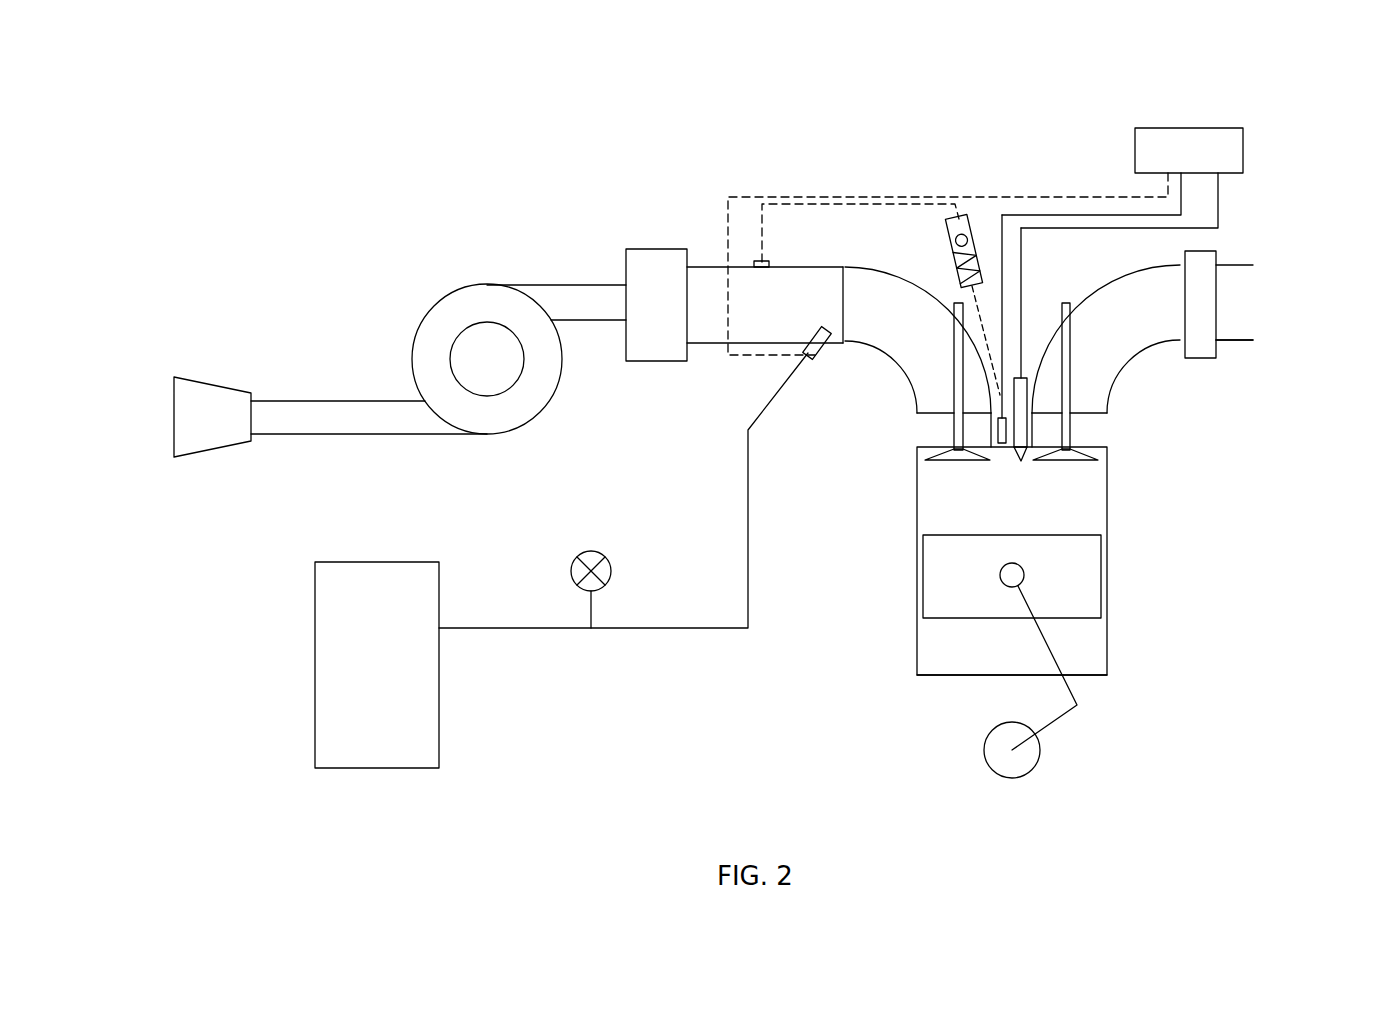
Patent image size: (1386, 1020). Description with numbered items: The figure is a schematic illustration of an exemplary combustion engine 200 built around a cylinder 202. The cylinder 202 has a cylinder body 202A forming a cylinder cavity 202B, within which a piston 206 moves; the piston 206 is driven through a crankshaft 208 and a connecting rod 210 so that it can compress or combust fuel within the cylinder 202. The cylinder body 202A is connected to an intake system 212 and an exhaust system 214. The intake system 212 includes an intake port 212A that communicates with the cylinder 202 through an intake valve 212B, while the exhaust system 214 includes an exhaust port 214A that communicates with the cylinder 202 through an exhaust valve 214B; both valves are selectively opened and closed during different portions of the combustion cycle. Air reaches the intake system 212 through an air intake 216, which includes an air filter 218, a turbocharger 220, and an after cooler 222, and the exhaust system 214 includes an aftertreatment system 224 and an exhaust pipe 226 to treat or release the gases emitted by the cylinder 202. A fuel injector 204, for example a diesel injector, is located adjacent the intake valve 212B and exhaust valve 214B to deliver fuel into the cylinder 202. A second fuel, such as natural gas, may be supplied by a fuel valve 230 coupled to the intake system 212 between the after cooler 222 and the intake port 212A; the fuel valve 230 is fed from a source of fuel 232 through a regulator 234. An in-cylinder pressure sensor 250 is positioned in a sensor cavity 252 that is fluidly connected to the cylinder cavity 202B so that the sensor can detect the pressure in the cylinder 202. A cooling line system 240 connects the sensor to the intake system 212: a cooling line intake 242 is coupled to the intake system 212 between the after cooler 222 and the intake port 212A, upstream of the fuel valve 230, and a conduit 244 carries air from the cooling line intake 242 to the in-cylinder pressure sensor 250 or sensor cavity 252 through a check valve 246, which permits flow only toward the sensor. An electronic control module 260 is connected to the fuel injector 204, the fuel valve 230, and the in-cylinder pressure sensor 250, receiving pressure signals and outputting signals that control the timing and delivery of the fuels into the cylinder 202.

The combustion engine 200 is at (771, 451).
The cylinder 202 is at (1073, 644).
The cylinder body 202A is at (1110, 642).
The cylinder cavity 202B is at (989, 709).
The fuel injector 204 is at (1017, 453).
The piston 206 is at (1103, 555).
The crankshaft 208 is at (1012, 780).
The rod 210 is at (1077, 703).
The intake system 212 is at (662, 310).
The intake port 212A is at (892, 267).
The intake valve 212B is at (953, 462).
The exhaust system 214 is at (1201, 350).
The exhaust port 214A is at (1125, 368).
The exhaust valve 214B is at (1088, 460).
The air intake 216 is at (330, 388).
The air filter 218 is at (222, 448).
The turbocharger 220 is at (523, 423).
The after cooler 222 is at (650, 247).
The aftertreatment system 224 is at (1217, 351).
The exhaust pipe 226 is at (1238, 265).
The fuel valve 230 is at (818, 357).
The source of fuel 232 is at (377, 768).
The regulator 234 is at (593, 552).
The cooling line system 240 is at (977, 258).
The cooling line intake 242 is at (766, 260).
The conduit 244 is at (822, 203).
The check valve 246 is at (963, 215).
The in-cylinder pressure sensor 250 is at (997, 386).
The sensor cavity 252 is at (1003, 425).
The electronic control module 260 is at (1243, 153).